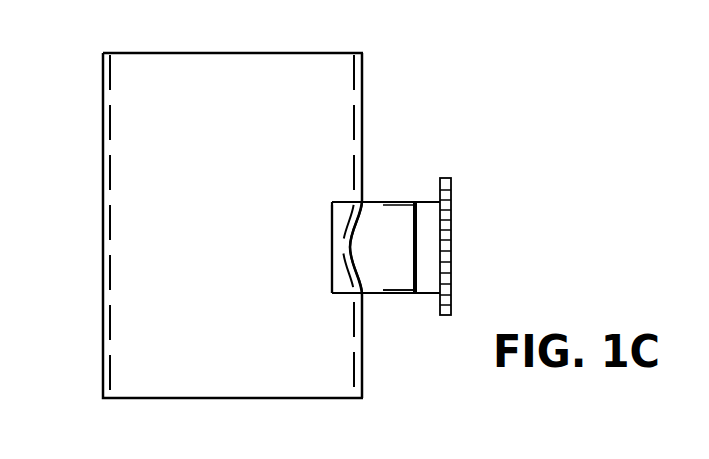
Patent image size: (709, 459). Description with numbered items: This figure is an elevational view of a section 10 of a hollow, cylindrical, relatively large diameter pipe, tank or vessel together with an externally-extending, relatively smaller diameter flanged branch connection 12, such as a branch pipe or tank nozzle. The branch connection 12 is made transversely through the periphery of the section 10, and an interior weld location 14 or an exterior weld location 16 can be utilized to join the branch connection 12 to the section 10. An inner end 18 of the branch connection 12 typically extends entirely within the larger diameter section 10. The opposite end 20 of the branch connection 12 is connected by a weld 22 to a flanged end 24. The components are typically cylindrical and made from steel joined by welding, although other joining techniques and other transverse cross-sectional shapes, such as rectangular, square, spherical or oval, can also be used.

The pipe, tank or vessel section 10 is at (363, 70).
The flanged branch connection 12 is at (401, 202).
The interior weld location 14 is at (360, 201).
The exterior weld location 16 is at (368, 200).
The inner end 18 is at (340, 218).
The opposite end 20 is at (400, 293).
The weld 22 is at (415, 293).
The flanged end 24 is at (452, 217).